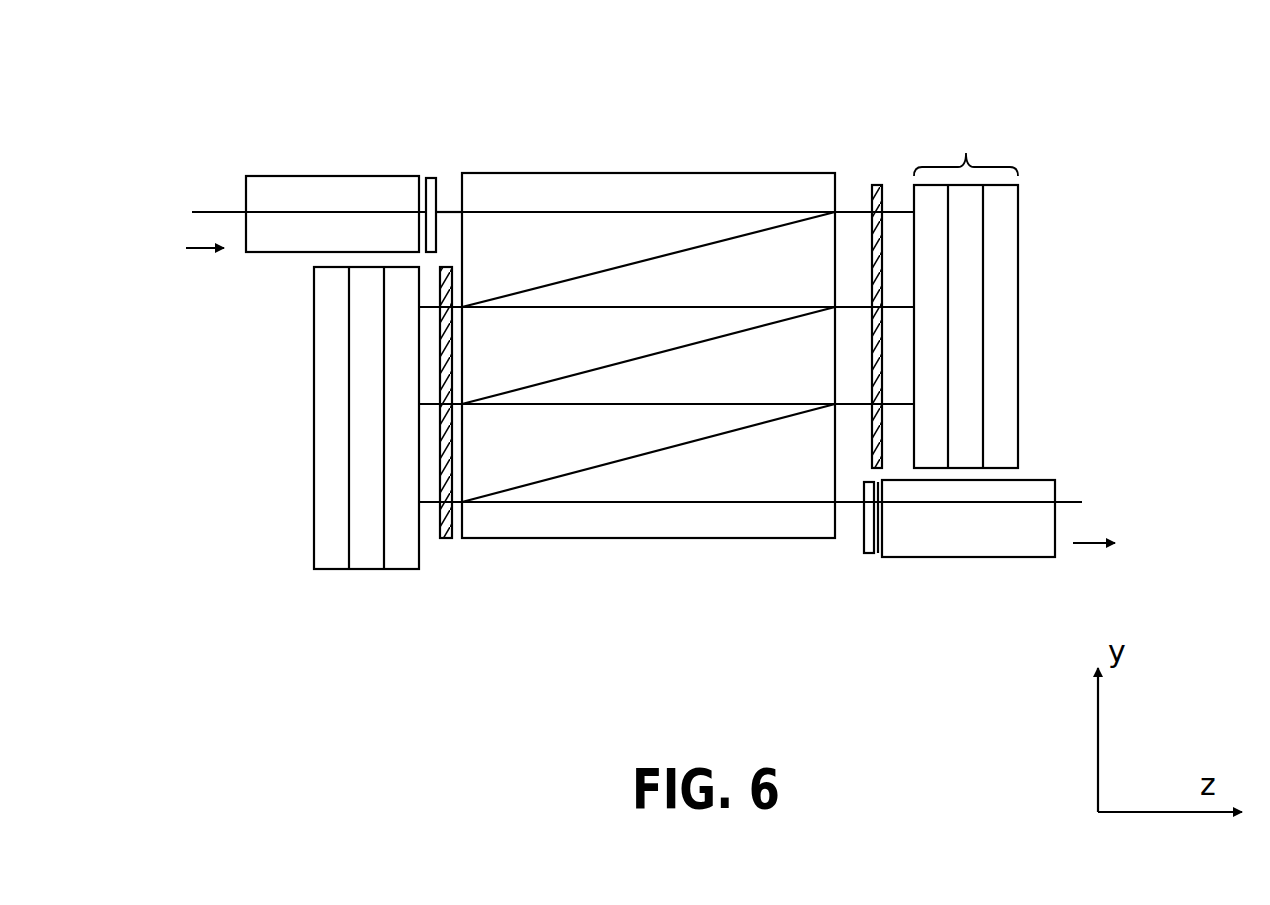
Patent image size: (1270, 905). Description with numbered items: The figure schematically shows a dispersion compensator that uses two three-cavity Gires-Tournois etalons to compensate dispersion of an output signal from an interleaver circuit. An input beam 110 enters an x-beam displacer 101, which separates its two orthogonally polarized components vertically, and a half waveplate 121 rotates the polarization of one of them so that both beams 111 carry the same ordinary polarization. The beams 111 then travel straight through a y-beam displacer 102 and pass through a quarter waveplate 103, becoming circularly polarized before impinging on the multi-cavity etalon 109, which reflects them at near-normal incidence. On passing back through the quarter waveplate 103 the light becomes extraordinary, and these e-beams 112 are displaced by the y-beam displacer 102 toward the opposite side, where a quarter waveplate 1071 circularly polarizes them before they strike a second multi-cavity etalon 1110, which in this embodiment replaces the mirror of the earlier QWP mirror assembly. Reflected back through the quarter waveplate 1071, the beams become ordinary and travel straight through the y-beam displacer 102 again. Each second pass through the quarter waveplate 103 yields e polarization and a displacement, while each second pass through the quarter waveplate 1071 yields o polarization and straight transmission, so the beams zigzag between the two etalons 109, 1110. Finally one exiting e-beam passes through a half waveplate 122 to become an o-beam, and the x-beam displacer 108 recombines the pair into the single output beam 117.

The input optical beam 110 is at (203, 212).
The x-beam displacer 101 is at (257, 175).
The half waveplate 121 is at (432, 177).
The quarter waveplate 1071 is at (445, 263).
The y-beam displacer 102 is at (535, 173).
The beams 111 is at (758, 192).
The e-beams 112 is at (672, 250).
The quarter waveplate 103 is at (880, 183).
The multi-cavity etalon 109 is at (1018, 172).
The multi-cavity etalon 1110 is at (368, 570).
The half waveplate 122 is at (862, 541).
The x-beam displacer 108 is at (1013, 557).
The beam 117 is at (1073, 498).